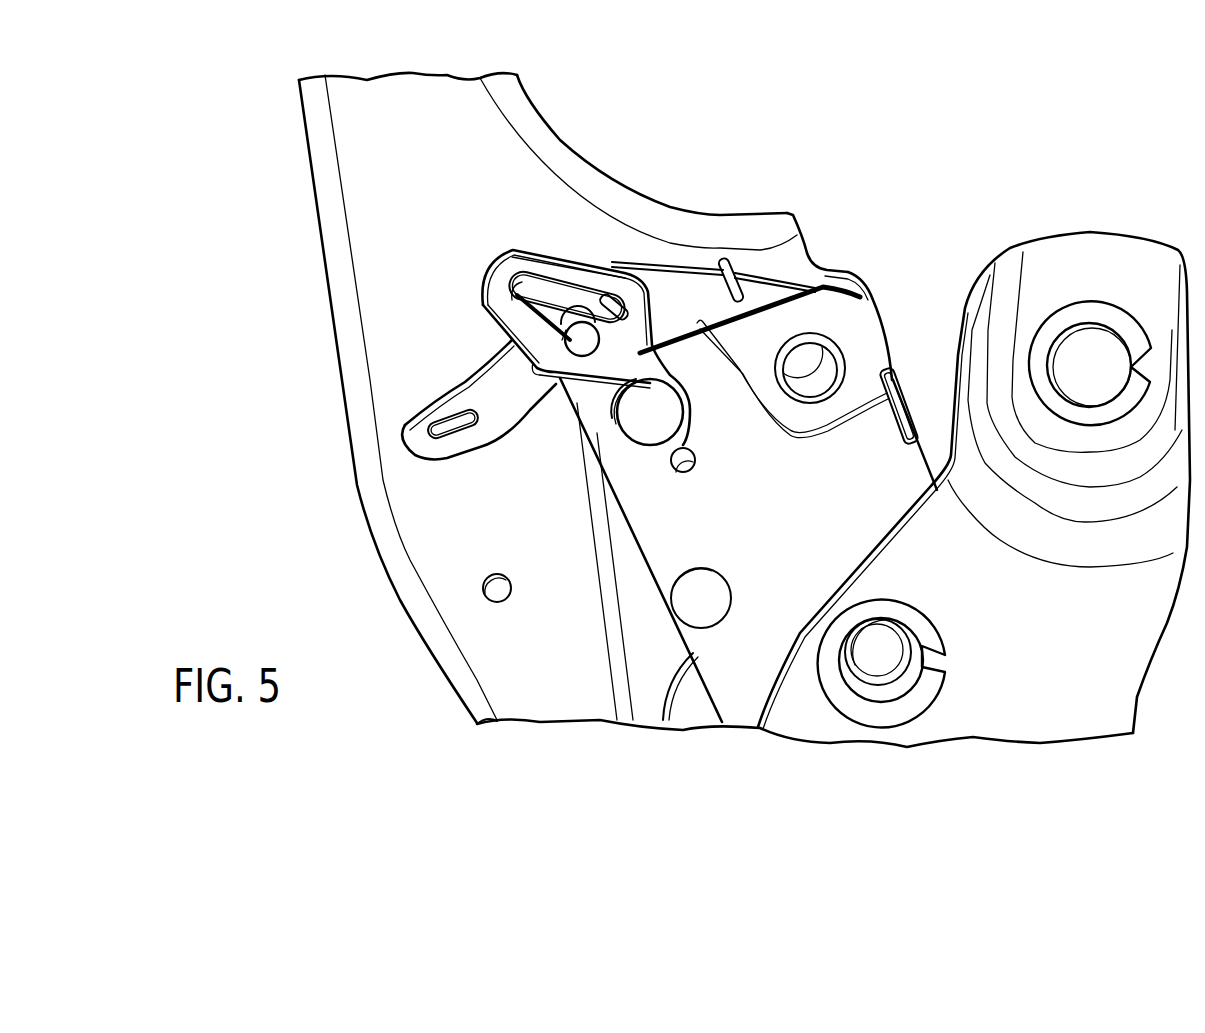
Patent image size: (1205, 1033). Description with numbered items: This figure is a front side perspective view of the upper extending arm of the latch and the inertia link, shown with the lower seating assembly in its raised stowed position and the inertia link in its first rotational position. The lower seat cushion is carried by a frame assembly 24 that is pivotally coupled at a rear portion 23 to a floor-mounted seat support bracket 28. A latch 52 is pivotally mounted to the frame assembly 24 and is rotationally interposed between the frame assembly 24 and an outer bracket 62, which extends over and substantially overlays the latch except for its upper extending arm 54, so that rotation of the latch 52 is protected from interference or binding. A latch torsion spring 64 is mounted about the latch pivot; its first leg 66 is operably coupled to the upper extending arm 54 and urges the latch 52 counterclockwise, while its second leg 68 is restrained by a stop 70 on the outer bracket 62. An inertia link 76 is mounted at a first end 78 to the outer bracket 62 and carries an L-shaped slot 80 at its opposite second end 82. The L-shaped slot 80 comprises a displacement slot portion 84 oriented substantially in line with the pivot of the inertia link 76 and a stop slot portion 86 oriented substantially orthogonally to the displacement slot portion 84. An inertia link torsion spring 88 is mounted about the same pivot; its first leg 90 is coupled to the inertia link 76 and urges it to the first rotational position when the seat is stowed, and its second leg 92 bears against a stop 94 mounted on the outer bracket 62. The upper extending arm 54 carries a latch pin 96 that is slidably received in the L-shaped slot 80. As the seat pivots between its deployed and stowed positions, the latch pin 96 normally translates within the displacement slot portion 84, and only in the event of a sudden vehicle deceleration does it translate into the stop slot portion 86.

The rear portion 23 is at (488, 657).
The frame assembly 24 is at (515, 104).
The seat support bracket 28 is at (1100, 313).
The latch 52 is at (762, 285).
The upper extending arm 54 is at (423, 448).
The outer bracket 62 is at (740, 682).
The latch torsion spring 64 is at (757, 290).
The first leg 66 is at (726, 257).
The second leg 68 is at (890, 390).
The stop 70 is at (910, 437).
The inertia link 76 is at (553, 268).
The first end 78 is at (718, 344).
The L-shaped slot 80 is at (517, 297).
The second end 82 is at (500, 278).
The displacement slot portion 84 is at (530, 360).
The stop slot portion 86 is at (583, 335).
The inertia link torsion spring 88 is at (673, 447).
The first leg 90 is at (577, 378).
The second leg 92 is at (671, 462).
The stop 94 is at (691, 470).
The latch pin 96 is at (606, 300).